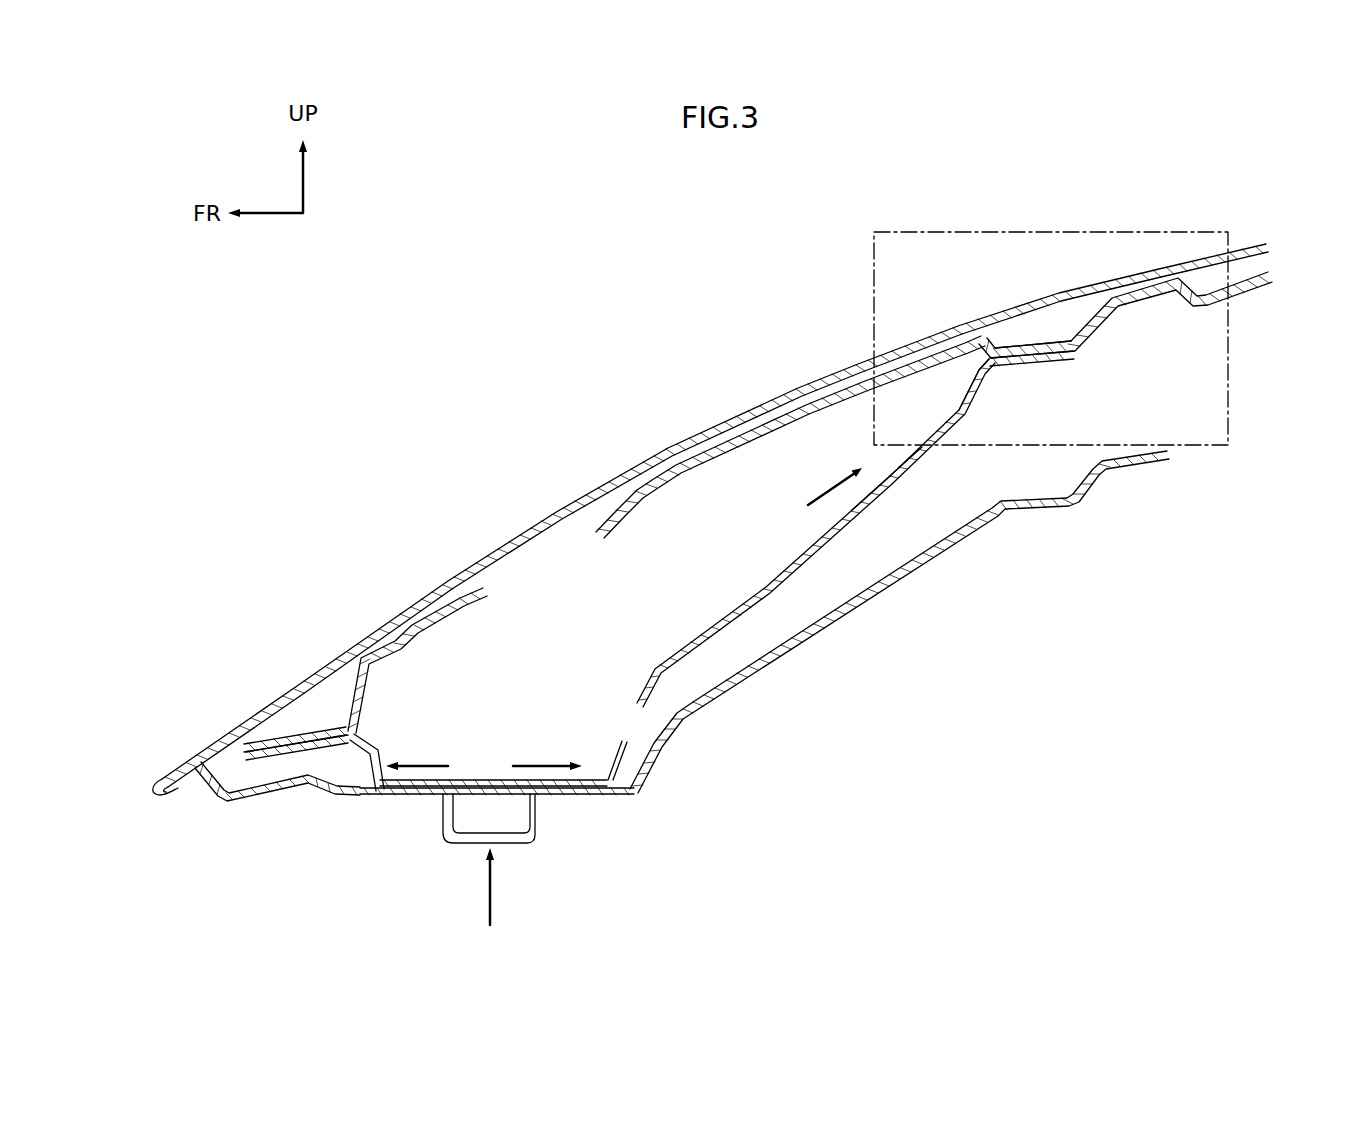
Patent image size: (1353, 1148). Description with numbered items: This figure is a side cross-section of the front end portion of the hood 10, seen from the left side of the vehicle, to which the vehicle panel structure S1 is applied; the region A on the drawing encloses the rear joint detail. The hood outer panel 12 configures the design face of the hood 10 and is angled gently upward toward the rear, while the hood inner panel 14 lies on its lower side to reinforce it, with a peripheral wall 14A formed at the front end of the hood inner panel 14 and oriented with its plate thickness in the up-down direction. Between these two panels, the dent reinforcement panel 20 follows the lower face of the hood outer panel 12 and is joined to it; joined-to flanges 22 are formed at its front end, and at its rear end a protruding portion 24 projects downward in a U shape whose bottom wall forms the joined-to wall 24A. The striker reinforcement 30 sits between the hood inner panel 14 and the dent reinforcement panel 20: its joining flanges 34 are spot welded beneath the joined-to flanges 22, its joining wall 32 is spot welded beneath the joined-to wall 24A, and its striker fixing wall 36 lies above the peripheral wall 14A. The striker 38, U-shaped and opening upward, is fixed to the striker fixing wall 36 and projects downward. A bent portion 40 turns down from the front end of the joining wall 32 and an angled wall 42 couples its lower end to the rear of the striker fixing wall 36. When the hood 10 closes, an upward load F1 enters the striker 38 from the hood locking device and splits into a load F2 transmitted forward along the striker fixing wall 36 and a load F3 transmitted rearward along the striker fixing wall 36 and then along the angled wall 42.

The hood 10 is at (650, 322).
The hood outer panel 12 is at (757, 407).
The hood inner panel 14 is at (914, 564).
The peripheral wall 14A is at (380, 796).
The dent reinforcement panel 20 is at (646, 470).
The joined-to flange 22 is at (304, 725).
The protruding portion 24 is at (1105, 320).
The joined-to wall 24A is at (1035, 340).
The striker reinforcement 30 is at (766, 588).
The joining wall 32 is at (1040, 357).
The joining flange 34 is at (278, 755).
The striker fixing wall 36 is at (487, 778).
The striker 38 is at (540, 820).
The bent portion 40 is at (958, 390).
The angled wall 42 is at (890, 478).
The region A is at (1085, 232).
The vehicle panel structure S1 is at (1125, 367).
The load F1 is at (492, 890).
The load F2 is at (436, 760).
The load F3 is at (543, 760).